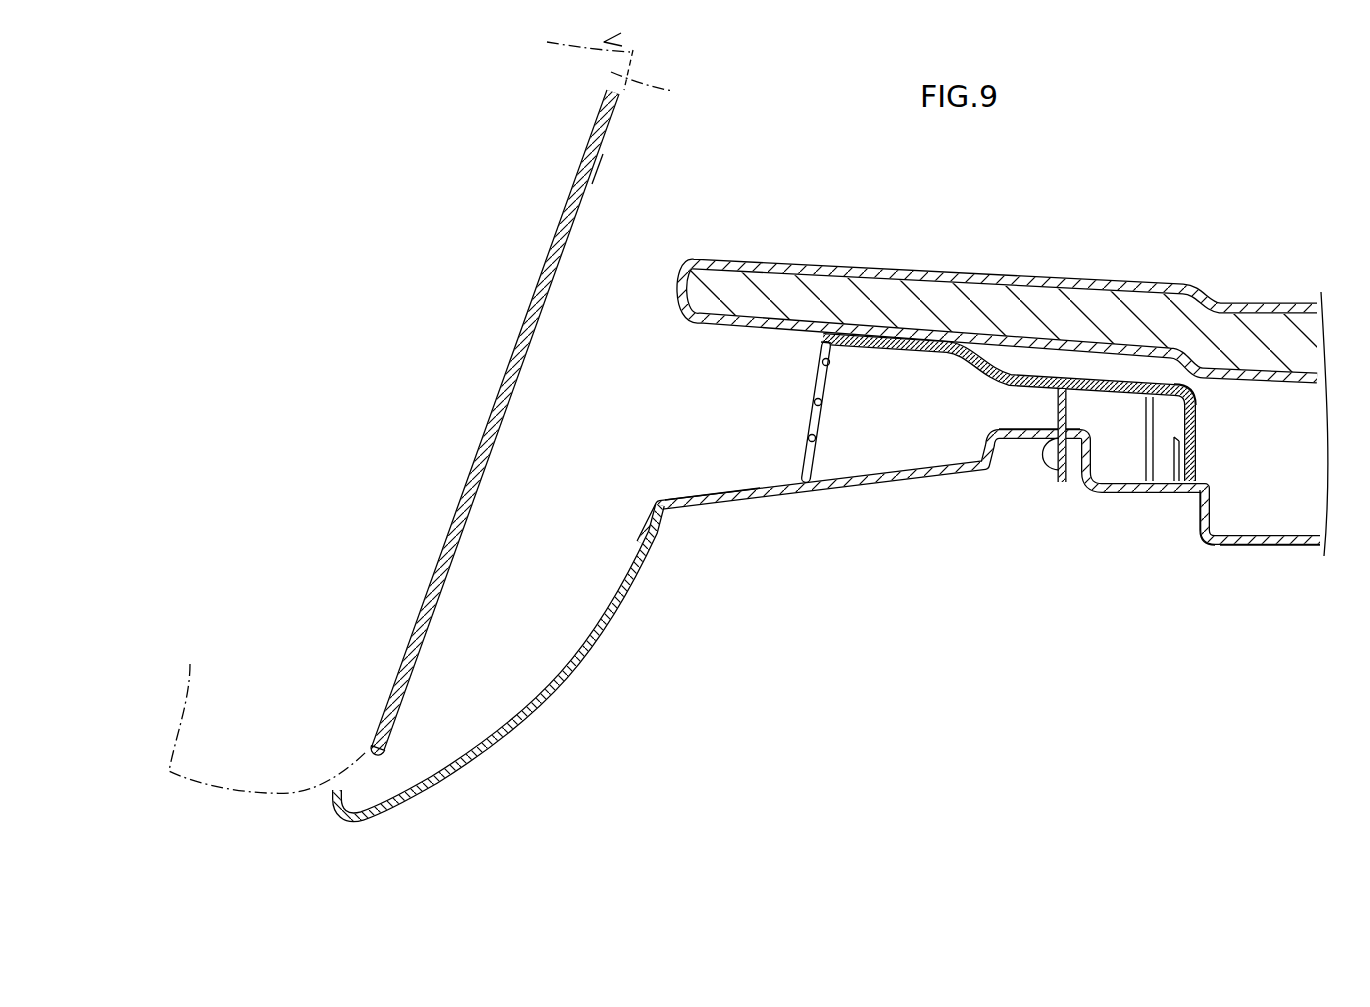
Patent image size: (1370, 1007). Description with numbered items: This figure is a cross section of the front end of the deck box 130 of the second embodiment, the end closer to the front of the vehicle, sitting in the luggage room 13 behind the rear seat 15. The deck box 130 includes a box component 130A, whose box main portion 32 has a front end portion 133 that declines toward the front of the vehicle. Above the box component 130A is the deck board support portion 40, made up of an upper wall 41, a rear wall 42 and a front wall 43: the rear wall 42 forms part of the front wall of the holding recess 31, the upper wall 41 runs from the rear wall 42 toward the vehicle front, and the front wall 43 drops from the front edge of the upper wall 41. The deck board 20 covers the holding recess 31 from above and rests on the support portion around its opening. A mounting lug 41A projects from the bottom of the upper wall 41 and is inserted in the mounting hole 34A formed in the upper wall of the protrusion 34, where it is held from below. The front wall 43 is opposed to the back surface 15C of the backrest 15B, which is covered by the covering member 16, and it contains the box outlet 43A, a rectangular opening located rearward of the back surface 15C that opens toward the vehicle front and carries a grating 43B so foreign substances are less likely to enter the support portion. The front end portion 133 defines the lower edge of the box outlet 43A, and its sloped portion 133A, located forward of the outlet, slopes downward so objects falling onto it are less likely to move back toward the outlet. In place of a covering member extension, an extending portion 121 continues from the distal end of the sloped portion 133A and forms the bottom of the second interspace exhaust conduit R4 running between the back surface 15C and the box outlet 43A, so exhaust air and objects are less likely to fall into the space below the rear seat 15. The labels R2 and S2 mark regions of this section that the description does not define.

The luggage room 13 is at (1005, 359).
The rear seat 15 is at (610, 37).
The backrest 15B is at (665, 89).
The back surface 15C is at (531, 327).
The covering member 16 is at (603, 154).
The deck board 20 is at (1261, 324).
The holding recess 31 is at (1249, 501).
The box main portion 32 is at (1298, 543).
The protrusion 34 is at (1012, 440).
The mounting hole 34A is at (1046, 452).
The deck board support portion 40 is at (1032, 340).
The upper wall 41 is at (937, 341).
The mounting lug 41A is at (1062, 470).
The rear wall 42 is at (1197, 413).
The front wall 43 is at (851, 404).
The box outlet 43A is at (828, 343).
The grating 43B is at (828, 403).
The extending portion 121 is at (586, 660).
The deck box 130 is at (1264, 595).
The box component 130A is at (1216, 553).
The front end portion 133 is at (910, 478).
The sloped portion 133A is at (713, 500).
The region R2 is at (933, 440).
The second interspace exhaust conduit R4 is at (575, 413).
The gap S2 is at (684, 305).